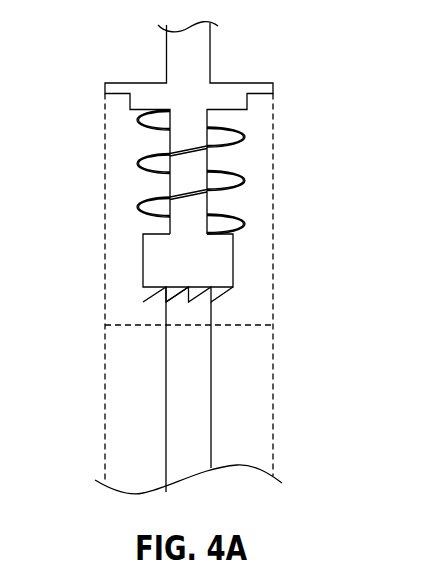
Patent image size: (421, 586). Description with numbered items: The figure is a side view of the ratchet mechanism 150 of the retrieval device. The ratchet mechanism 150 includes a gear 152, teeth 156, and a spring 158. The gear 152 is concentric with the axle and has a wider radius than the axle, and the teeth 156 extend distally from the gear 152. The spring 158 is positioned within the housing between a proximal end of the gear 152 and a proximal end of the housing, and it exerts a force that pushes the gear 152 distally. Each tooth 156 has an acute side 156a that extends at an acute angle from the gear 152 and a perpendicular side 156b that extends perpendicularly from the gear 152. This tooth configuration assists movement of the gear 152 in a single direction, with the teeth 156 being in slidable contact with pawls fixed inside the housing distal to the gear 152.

The ratchet mechanism 150 is at (273, 150).
The gear 152 is at (220, 265).
The teeth 156 is at (147, 298).
The acute side 156a is at (170, 302).
The perpendicular side 156b is at (163, 300).
The spring 158 is at (243, 223).